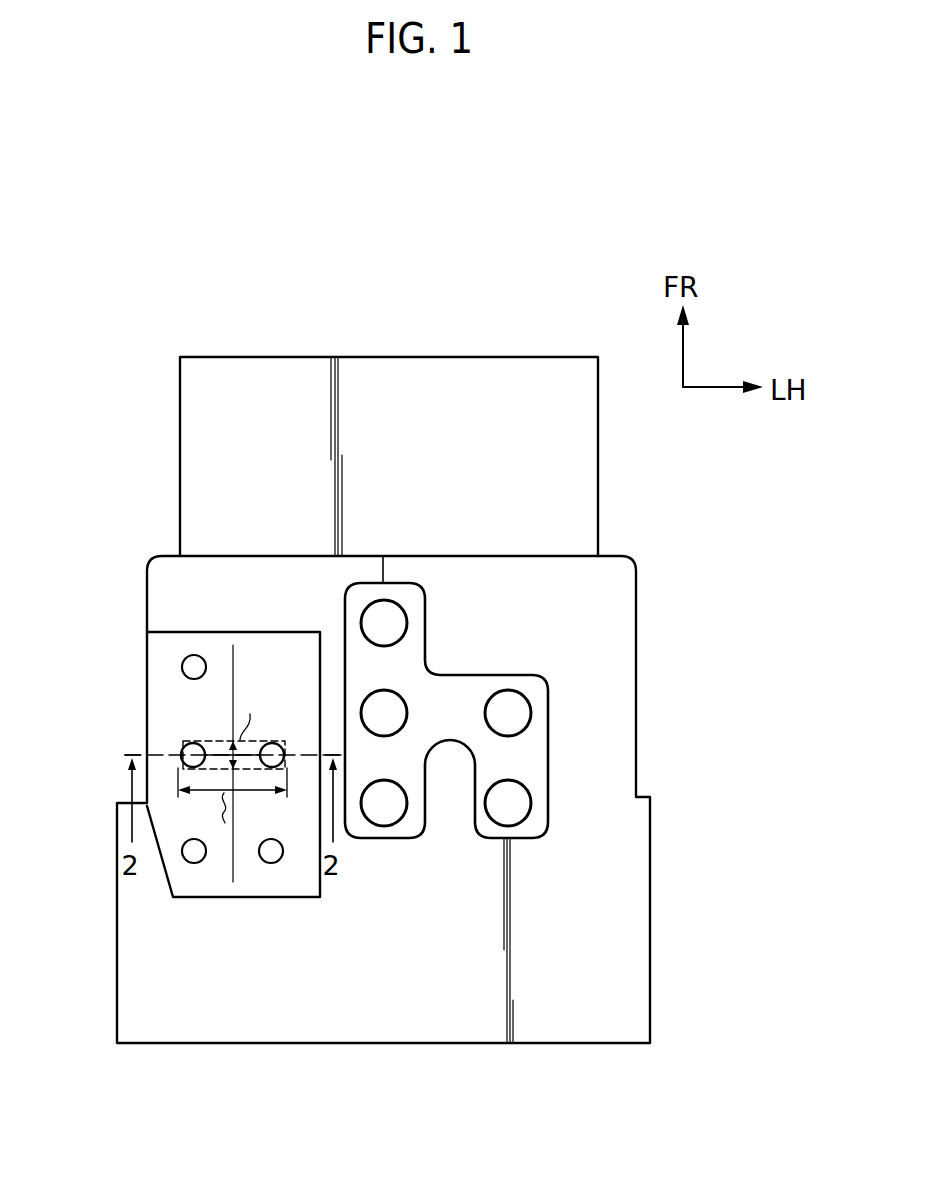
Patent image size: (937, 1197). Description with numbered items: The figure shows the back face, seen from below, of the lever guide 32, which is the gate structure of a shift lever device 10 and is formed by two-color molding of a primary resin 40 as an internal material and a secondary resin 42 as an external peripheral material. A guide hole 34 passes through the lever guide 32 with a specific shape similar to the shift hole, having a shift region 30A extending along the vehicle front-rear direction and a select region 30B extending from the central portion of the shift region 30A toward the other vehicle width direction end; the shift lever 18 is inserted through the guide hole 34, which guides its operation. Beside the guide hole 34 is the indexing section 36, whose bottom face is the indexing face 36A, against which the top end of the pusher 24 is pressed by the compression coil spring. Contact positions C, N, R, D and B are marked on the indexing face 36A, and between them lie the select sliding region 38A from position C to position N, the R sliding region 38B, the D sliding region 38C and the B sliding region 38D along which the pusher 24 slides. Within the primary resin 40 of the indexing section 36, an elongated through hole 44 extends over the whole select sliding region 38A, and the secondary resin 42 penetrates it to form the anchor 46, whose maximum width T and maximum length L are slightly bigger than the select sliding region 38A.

The shift device 10 is at (383, 631).
The lever guide 32 is at (160, 318).
The indexing section 36 is at (177, 726).
The indexing face 36A is at (160, 668).
The select sliding region 38A is at (243, 753).
The R sliding region 38B is at (195, 700).
The D sliding region 38C is at (192, 812).
The B sliding region 38D is at (270, 812).
The primary resin 40 is at (248, 645).
The secondary resin 42 is at (272, 645).
The through hole 44 is at (210, 740).
The anchor 46 is at (205, 742).
The pusher 24 is at (288, 770).
The guide hole 34 is at (550, 697).
The shift region 30A is at (383, 663).
The select region 30B is at (455, 705).
The shift lever 18 is at (534, 716).